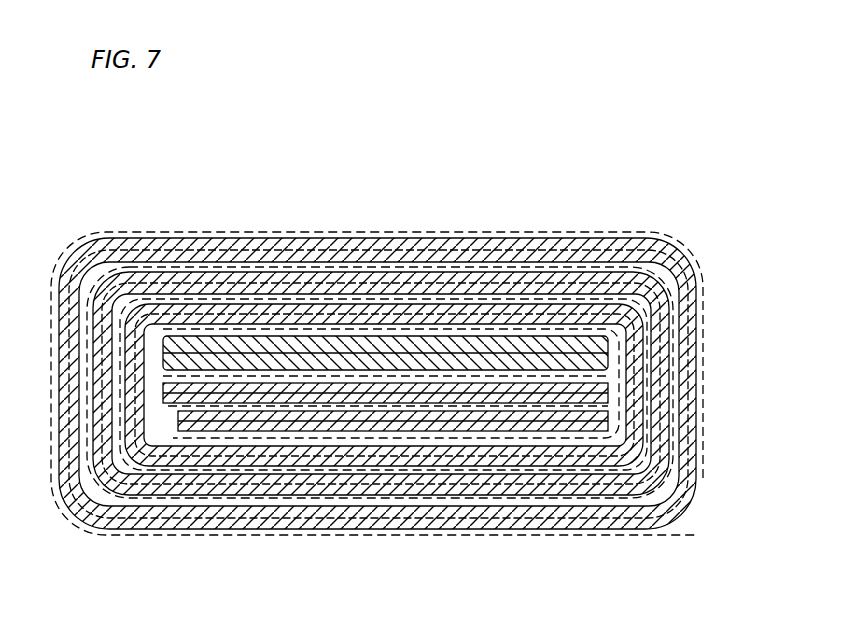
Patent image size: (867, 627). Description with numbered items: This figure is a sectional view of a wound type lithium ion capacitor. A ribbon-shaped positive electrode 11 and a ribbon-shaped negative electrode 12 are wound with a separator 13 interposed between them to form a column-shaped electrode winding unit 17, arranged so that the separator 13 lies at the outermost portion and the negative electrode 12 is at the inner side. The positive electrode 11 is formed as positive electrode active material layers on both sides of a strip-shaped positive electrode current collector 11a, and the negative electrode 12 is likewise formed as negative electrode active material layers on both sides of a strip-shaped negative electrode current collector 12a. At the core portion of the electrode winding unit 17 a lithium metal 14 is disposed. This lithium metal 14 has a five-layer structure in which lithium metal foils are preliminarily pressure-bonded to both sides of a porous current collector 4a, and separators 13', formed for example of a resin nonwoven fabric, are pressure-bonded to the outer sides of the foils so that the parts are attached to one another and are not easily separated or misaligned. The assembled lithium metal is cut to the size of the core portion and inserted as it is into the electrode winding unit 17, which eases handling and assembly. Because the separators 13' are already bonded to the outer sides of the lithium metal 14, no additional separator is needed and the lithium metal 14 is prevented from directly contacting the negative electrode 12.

The positive electrode 11 is at (333, 268).
The positive electrode current collector 11a is at (262, 268).
The negative electrode 12 is at (598, 246).
The negative electrode current collector 12a is at (540, 242).
The separator 13 is at (377, 342).
The separator 13' is at (465, 373).
The lithium metal 14 is at (604, 364).
The porous current collector 4a is at (602, 355).
The electrode winding unit 17 is at (409, 342).